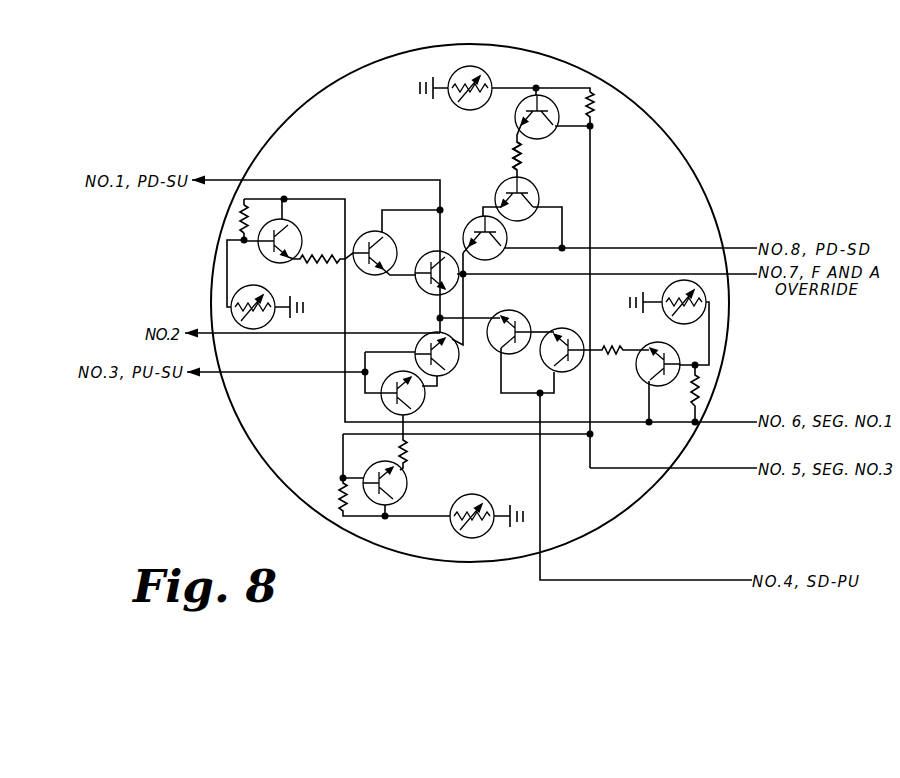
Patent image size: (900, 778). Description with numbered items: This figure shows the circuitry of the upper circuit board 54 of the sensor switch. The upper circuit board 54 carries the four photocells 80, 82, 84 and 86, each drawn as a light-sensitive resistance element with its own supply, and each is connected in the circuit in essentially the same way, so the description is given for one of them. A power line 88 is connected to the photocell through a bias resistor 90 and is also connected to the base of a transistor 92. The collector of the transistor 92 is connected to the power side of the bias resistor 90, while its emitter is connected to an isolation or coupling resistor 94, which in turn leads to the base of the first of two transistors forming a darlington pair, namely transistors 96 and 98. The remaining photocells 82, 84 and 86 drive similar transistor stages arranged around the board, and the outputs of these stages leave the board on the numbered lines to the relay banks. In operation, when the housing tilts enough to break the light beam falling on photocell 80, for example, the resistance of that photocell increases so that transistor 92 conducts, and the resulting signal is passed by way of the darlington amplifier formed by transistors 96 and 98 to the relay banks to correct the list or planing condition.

The upper circuit board 54 is at (679, 127).
The photocell 80 is at (487, 74).
The photocell 82 is at (708, 292).
The photocell 84 is at (471, 539).
The photocell 86 is at (230, 321).
The power line 88 is at (590, 207).
The bias resistor 90 is at (596, 104).
The transistor 92 is at (568, 93).
The isolation or coupling resistor 94 is at (513, 158).
The transistor 96 is at (533, 181).
The transistor 98 is at (475, 212).